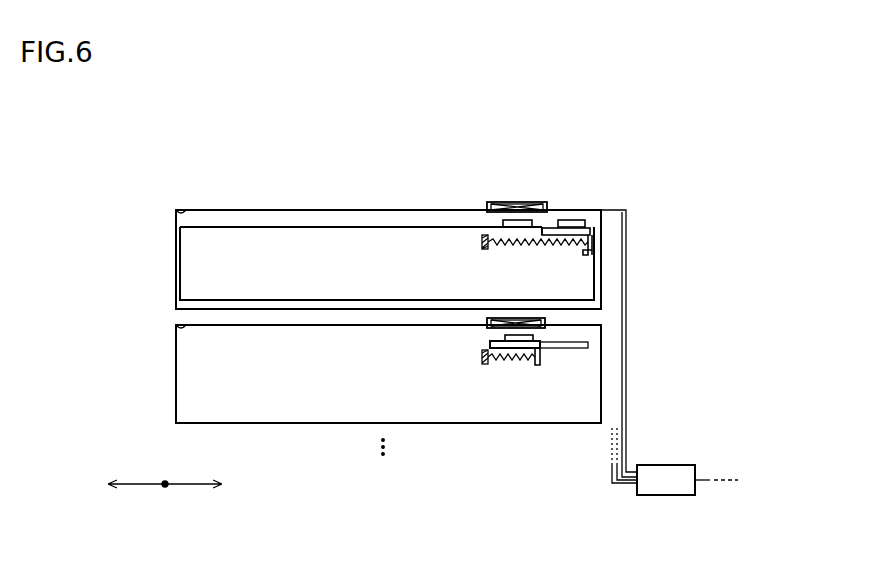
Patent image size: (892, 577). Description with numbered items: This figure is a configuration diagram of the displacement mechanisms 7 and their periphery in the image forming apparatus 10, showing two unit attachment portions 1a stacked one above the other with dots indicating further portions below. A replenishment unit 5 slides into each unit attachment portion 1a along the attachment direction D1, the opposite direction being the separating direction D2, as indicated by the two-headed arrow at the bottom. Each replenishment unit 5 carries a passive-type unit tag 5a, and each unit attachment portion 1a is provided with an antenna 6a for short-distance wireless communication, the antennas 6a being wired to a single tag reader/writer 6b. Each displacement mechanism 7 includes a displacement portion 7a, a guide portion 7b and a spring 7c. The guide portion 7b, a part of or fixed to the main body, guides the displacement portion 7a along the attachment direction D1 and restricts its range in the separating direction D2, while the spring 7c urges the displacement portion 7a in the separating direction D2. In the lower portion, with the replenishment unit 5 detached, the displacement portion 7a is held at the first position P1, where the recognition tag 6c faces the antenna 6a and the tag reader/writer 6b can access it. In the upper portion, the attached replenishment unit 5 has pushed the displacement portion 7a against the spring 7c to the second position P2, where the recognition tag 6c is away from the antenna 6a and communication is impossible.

The image forming apparatus 10 is at (79, 176).
The unit attachment portion 1a is at (176, 212).
The replenishment unit 5 is at (293, 227).
The unit tag 5a is at (503, 224).
The antenna 6a is at (548, 205).
The recognition tag 6c is at (572, 220).
The tag reader/writer 6b is at (665, 465).
The displacement mechanism 7 is at (602, 245).
The displacement portion 7a is at (600, 223).
The guide portion 7b is at (578, 336).
The spring 7c is at (525, 246).
The first position P1 is at (481, 331).
The second position P2 is at (606, 206).
The attachment direction D1 is at (208, 484).
The separating direction D2 is at (121, 484).